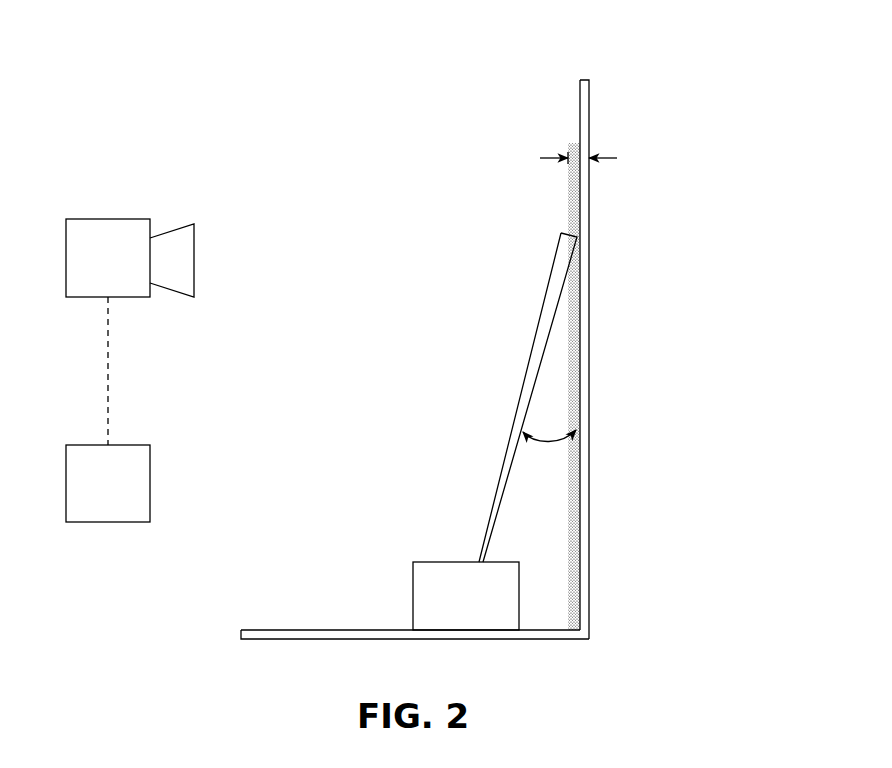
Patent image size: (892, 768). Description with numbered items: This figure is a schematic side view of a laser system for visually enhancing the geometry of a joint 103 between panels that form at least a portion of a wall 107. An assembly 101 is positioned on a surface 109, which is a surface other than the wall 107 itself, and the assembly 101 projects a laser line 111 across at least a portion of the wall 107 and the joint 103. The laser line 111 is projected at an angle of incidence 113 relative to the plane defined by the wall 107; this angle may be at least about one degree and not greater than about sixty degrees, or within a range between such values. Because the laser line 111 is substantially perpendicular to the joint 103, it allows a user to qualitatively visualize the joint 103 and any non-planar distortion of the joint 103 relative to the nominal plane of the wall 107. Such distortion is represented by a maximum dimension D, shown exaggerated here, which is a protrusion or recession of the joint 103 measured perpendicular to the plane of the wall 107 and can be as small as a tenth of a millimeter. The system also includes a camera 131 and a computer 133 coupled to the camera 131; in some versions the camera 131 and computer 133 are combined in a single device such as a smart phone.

The wall 107 is at (640, 56).
The joint 103 is at (578, 207).
The maximum dimension D is at (607, 157).
The surface 109 is at (264, 619).
The assembly 101 is at (398, 579).
The laser line 111 is at (567, 233).
The angle of incidence 113 is at (546, 443).
The camera 131 is at (108, 219).
The computer 133 is at (107, 522).